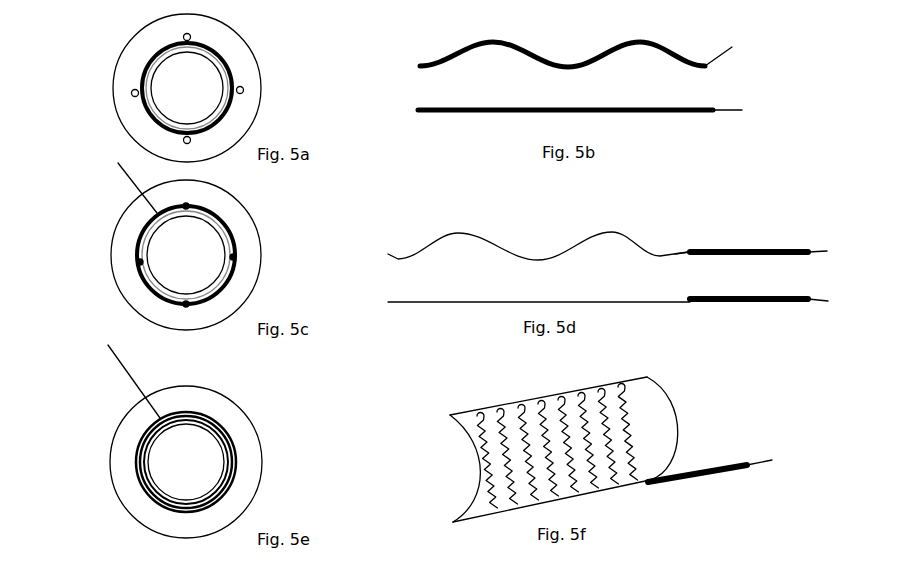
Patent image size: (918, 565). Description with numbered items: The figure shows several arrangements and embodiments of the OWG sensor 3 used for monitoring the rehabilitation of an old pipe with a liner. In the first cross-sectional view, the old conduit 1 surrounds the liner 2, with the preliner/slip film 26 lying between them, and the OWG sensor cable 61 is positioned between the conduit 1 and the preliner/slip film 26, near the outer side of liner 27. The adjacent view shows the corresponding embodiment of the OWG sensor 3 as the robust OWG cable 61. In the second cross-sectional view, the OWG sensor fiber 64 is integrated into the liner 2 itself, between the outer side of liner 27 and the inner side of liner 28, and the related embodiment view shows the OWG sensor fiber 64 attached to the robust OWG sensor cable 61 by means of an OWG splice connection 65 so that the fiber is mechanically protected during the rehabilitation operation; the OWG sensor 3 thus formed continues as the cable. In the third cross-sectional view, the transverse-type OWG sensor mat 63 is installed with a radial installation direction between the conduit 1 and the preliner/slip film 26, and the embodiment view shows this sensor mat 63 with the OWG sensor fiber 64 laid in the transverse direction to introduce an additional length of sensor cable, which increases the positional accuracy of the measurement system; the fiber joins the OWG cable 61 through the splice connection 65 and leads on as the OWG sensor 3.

In FIG. 5A, the conduit 1 is at (130, 62).
In FIG. 5C, the conduit 1 is at (122, 240).
In FIG. 5E, the conduit 1 is at (122, 440).
In FIG. 5A, the liner 2 is at (220, 70).
In FIG. 5C, the liner 2 is at (232, 239).
In FIG. 5E, the liner 2 is at (212, 432).
In FIG. 5B, the OWG sensor 3 is at (722, 66).
In FIG. 5D, the OWG sensor 3 is at (812, 297).
In FIG. 5F, the OWG sensor 3 is at (760, 455).
In FIG. 5A, the preliner/slip film 26 is at (232, 105).
In FIG. 5C, the preliner/slip film 26 is at (148, 290).
In FIG. 5A, the outer side of liner 27 is at (150, 116).
In FIG. 5C, the inner side of liner 28 is at (156, 283).
In FIG. 5A, the OWG cable 61 is at (131, 95).
In FIG. 5B, the OWG cable 61 is at (607, 58).
In FIG. 5D, the OWG cable 61 is at (707, 297).
In FIG. 5F, the OWG cable 61 is at (727, 462).
In FIG. 5E, the OWG sensor mat (transverse type) 63 is at (134, 458).
In FIG. 5F, the OWG sensor mat (transverse type) 63 is at (480, 500).
In FIG. 5C, the OWG sensor fiber 64 is at (238, 256).
In FIG. 5D, the OWG sensor fiber 64 is at (477, 298).
In FIG. 5F, the OWG sensor fiber 64 is at (545, 405).
In FIG. 5D, the OWG splice connection 65 is at (681, 297).
In FIG. 5F, the OWG splice connection 65 is at (660, 481).